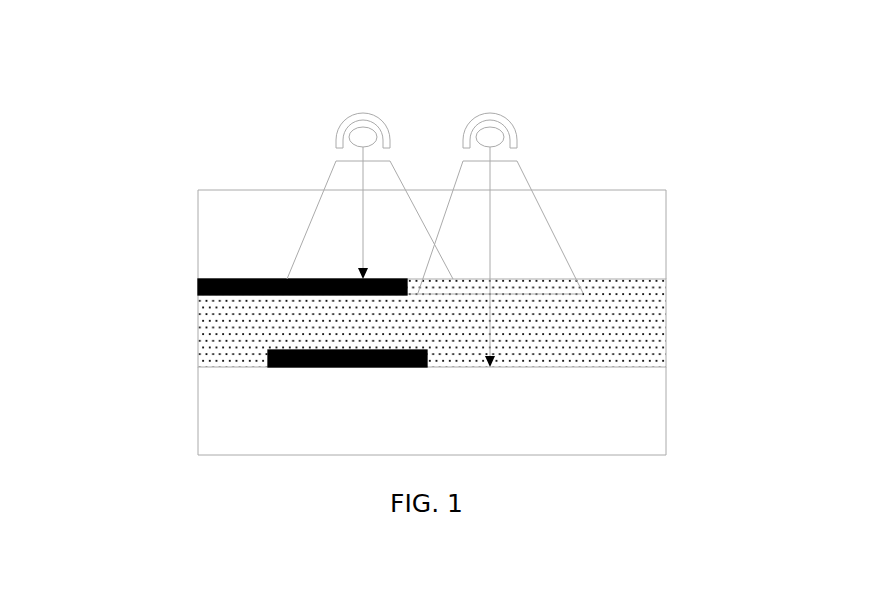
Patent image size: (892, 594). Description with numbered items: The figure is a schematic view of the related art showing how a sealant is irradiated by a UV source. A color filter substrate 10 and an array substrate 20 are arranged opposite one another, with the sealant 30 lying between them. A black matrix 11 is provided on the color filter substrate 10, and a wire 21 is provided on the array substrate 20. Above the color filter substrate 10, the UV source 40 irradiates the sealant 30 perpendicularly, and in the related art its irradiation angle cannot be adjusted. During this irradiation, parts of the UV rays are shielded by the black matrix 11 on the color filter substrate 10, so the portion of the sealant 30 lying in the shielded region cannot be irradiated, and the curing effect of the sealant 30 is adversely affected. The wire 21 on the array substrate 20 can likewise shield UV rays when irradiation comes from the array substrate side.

The color filter substrate 10 is at (168, 235).
The black matrix 11 is at (198, 286).
The array substrate 20 is at (168, 409).
The wire 21 is at (268, 358).
The sealant 30 is at (597, 322).
The UV source 40 is at (363, 113).